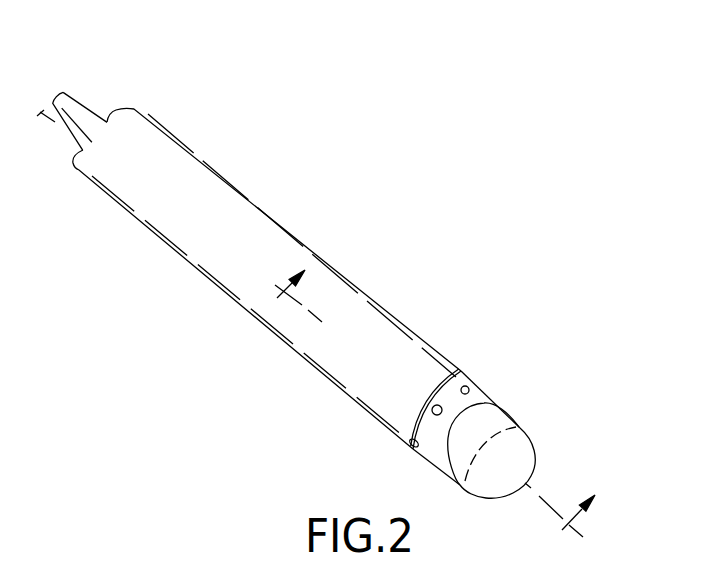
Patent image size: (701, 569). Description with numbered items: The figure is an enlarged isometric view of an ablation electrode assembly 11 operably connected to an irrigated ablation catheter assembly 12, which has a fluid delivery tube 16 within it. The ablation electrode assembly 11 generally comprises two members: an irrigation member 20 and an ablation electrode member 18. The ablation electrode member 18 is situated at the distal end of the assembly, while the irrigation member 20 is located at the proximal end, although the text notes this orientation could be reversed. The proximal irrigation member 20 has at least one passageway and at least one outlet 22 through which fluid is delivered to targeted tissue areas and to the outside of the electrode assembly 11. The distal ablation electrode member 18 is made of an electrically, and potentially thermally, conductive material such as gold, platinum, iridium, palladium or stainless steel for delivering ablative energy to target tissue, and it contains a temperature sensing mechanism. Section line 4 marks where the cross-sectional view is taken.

The ablation electrode assembly 11 is at (512, 387).
The irrigated ablation catheter assembly 12 is at (378, 270).
The fluid delivery tube 16 is at (102, 100).
The ablation electrode member 18 is at (533, 453).
The irrigation member 20 is at (457, 383).
The outlet 22 is at (400, 413).
The section line 4- 4 is at (429, 404).